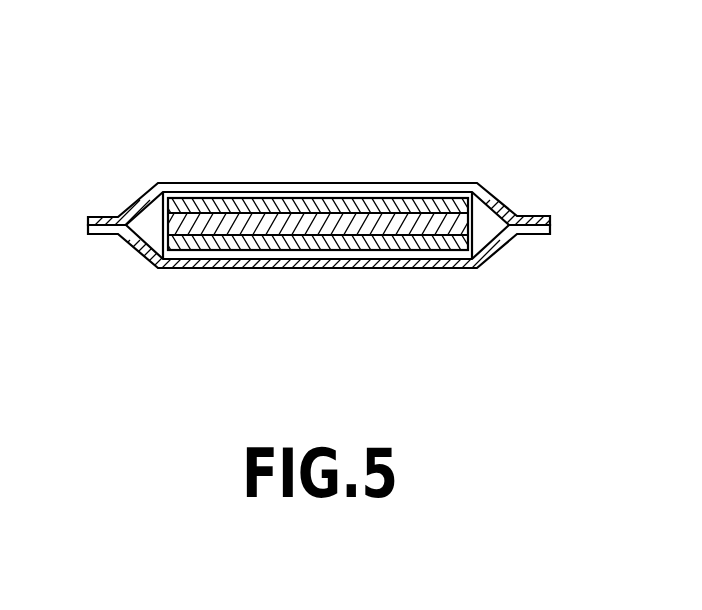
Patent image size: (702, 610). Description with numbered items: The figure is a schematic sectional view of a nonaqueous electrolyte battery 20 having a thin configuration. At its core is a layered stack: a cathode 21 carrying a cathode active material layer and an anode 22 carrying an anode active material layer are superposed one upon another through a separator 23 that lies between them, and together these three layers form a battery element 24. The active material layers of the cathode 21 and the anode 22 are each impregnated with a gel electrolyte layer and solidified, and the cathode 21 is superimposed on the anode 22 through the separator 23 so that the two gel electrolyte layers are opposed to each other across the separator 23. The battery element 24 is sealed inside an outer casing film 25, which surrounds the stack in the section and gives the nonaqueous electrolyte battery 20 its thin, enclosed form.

The nonaqueous electrolyte battery 20 is at (247, 151).
The cathode 21 is at (442, 205).
The anode 22 is at (327, 238).
The separator 23 is at (397, 225).
The battery element 24 is at (512, 97).
The outer casing film 25 is at (312, 261).